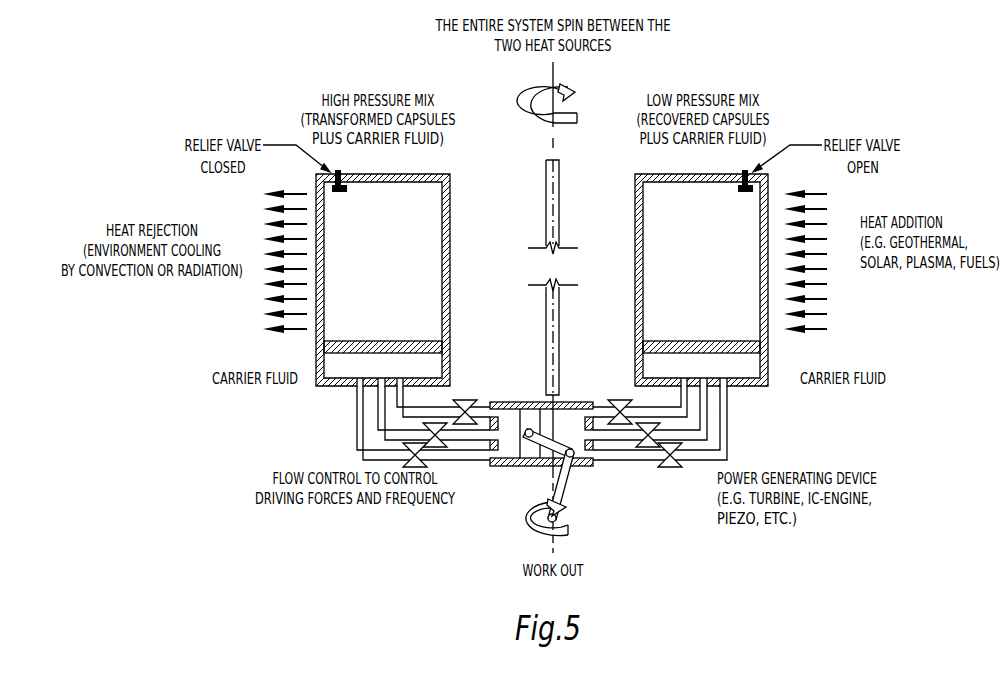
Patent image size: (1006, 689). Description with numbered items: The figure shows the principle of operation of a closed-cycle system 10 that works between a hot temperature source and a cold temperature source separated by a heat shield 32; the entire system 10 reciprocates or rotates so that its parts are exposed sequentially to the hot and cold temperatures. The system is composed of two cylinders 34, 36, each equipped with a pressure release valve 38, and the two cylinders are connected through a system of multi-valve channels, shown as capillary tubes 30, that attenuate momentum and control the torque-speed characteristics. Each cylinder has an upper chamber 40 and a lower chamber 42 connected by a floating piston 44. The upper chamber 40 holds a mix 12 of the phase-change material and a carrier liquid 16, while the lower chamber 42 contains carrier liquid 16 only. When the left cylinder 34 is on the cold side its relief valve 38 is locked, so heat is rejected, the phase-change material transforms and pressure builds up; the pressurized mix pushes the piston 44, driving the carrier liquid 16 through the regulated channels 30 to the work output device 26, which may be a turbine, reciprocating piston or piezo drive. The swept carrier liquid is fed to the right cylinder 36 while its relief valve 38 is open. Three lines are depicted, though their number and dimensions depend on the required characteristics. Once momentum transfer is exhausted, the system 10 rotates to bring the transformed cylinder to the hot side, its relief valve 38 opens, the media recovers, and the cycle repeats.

The system 10 is at (722, 50).
The mix 12 is at (371, 281).
The carrier liquid 16 is at (432, 368).
The work output device 26 is at (522, 458).
The capillary tubes 30 is at (360, 420).
The heat shield 32 is at (556, 182).
The left cylinder 34 is at (445, 240).
The right cylinder 36 is at (641, 232).
The pressure release valve 38 is at (346, 173).
The upper chamber 40 is at (371, 219).
The lower chamber 42 is at (371, 376).
The floating piston 44 is at (436, 346).